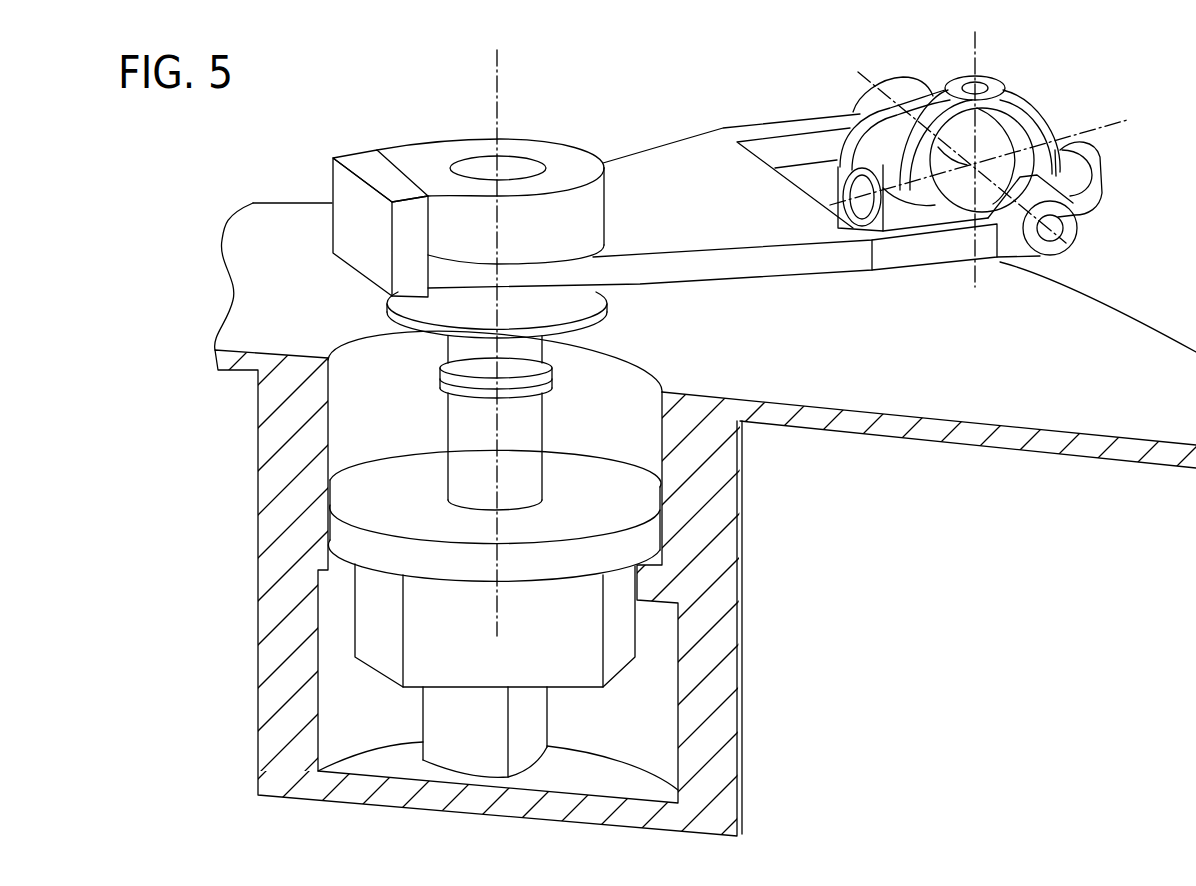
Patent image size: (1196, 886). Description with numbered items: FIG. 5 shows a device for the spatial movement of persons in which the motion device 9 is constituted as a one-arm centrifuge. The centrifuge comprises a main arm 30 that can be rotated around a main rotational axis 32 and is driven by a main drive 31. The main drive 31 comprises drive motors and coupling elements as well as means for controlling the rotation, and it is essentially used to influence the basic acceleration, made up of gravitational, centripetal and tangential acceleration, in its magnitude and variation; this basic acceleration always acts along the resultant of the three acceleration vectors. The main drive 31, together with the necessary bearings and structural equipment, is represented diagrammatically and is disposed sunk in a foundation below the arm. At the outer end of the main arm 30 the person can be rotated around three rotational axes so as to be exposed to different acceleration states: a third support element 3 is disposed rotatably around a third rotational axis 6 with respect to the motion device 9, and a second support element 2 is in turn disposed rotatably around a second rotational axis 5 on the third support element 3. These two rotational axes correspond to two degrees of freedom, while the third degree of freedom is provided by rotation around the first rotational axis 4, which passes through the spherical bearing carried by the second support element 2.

The second support element 2 is at (1025, 93).
The third support element 3 is at (1093, 155).
The first rotational axis 4 is at (975, 43).
The second rotational axis 5 is at (1103, 130).
The third rotational axis 6 is at (1066, 222).
The motion device 9 is at (782, 220).
The main arm 30 is at (648, 187).
The main drive 31 is at (573, 647).
The main rotational axis 32 is at (497, 63).